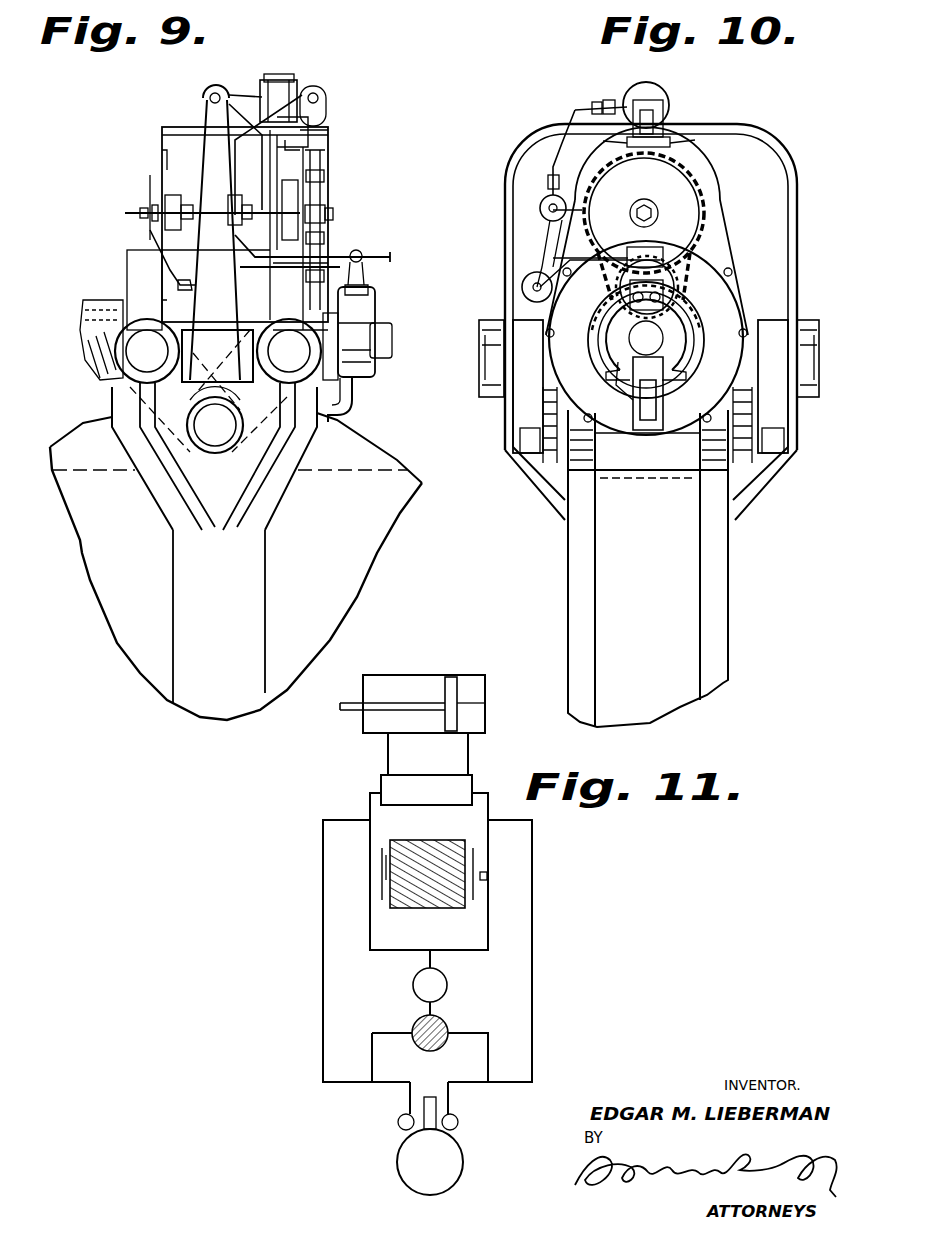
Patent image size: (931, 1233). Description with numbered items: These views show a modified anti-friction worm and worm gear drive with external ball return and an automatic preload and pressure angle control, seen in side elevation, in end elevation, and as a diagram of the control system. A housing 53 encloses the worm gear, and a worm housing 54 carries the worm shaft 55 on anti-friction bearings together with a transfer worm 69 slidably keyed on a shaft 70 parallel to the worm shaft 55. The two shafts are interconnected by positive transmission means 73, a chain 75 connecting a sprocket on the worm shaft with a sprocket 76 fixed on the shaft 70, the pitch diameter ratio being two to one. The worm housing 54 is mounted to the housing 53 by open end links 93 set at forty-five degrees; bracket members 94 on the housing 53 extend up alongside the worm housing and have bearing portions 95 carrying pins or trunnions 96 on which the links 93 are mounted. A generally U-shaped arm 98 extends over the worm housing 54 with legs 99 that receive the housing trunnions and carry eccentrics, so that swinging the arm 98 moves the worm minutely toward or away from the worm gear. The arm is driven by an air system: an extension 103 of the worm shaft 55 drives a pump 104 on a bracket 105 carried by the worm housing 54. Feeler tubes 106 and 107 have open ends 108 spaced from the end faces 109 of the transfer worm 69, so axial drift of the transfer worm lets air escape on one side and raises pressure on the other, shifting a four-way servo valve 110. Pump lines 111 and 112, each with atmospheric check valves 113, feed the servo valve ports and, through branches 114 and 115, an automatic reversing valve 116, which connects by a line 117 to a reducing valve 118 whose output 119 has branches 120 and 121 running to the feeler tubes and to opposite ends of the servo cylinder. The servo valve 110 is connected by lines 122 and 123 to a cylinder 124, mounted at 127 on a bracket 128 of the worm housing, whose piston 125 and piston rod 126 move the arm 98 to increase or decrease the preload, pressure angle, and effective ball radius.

In FIG. 9, the housing 53 is at (256, 585).
In FIG. 10, the housing 53 is at (728, 580).
In FIG. 9, the worm housing 54 is at (159, 128).
In FIG. 10, the worm housing 54 is at (718, 196).
In FIG. 9, the worm shaft 55 is at (100, 300).
In FIG. 11, the transfer worm 69 is at (437, 908).
In FIG. 9, the shaft 70 is at (286, 195).
In FIG. 9, the positive transmission means 73 is at (328, 215).
In FIG. 10, the positive transmission means 73 is at (700, 187).
In FIG. 9, the chain 75 is at (328, 240).
In FIG. 10, the chain 75 is at (718, 262).
In FIG. 9, the sprocket 76 is at (325, 176).
In FIG. 10, the sprocket 76 is at (697, 223).
In FIG. 9, the open end links 93 is at (178, 362).
In FIG. 10, the open end links 93 is at (780, 415).
In FIG. 10, the bracket members 94 is at (535, 490).
In FIG. 10, the bearing portions 95 is at (492, 320).
In FIG. 9, the pins or trunnions 96 is at (275, 385).
In FIG. 9, the U-shaped arm 98 is at (200, 175).
In FIG. 10, the U-shaped arm 98 is at (748, 127).
In FIG. 9, the legs 99 is at (232, 310).
In FIG. 10, the legs 99 is at (797, 290).
In FIG. 9, the extension 103 is at (392, 332).
In FIG. 10, the pump 104 is at (660, 365).
In FIG. 11, the pump 104 is at (463, 1160).
In FIG. 9, the bracket 105 is at (352, 408).
In FIG. 10, the bracket 105 is at (633, 395).
In FIG. 9, the feeler tube 106 is at (285, 236).
In FIG. 11, the feeler tube 106 is at (487, 878).
In FIG. 9, the feeler tube 107 is at (152, 205).
In FIG. 11, the feeler tube 107 is at (382, 875).
In FIG. 11, the open ends 108 is at (470, 873).
In FIG. 9, the end faces 109 is at (375, 305).
In FIG. 11, the end faces 109 is at (388, 848).
In FIG. 9, the four-way servo valve 110 is at (196, 240).
In FIG. 10, the four-way servo valve 110 is at (540, 208).
In FIG. 11, the four-way servo valve 110 is at (381, 790).
In FIG. 11, the line 111 is at (405, 1100).
In FIG. 11, the line 112 is at (452, 1098).
In FIG. 11, the atmospheric check valves 113 is at (458, 1124).
In FIG. 11, the branch 114 is at (372, 1060).
In FIG. 11, the branch 115 is at (488, 1055).
In FIG. 11, the automatic reversing valve 116 is at (448, 1028).
In FIG. 11, the line 117 is at (435, 1008).
In FIG. 10, the reducing valve 118 is at (522, 283).
In FIG. 11, the reducing valve 118 is at (413, 990).
In FIG. 11, the output 119 is at (430, 960).
In FIG. 9, the branch 120 is at (143, 225).
In FIG. 11, the branch 120 is at (370, 935).
In FIG. 9, the branch 121 is at (262, 210).
In FIG. 11, the branch 121 is at (488, 935).
In FIG. 9, the line 122 is at (245, 133).
In FIG. 11, the line 122 is at (388, 757).
In FIG. 9, the line 123 is at (285, 80).
In FIG. 10, the line 123 is at (578, 92).
In FIG. 11, the line 123 is at (468, 745).
In FIG. 9, the cylinder 124 is at (297, 90).
In FIG. 10, the cylinder 124 is at (669, 102).
In FIG. 11, the cylinder 124 is at (425, 675).
In FIG. 11, the piston 125 is at (457, 700).
In FIG. 9, the piston rod 126 is at (245, 96).
In FIG. 11, the piston rod 126 is at (350, 715).
In FIG. 10, the mounting 127 is at (695, 140).
In FIG. 9, the bracket 128 is at (328, 133).
In FIG. 10, the bracket 128 is at (603, 141).